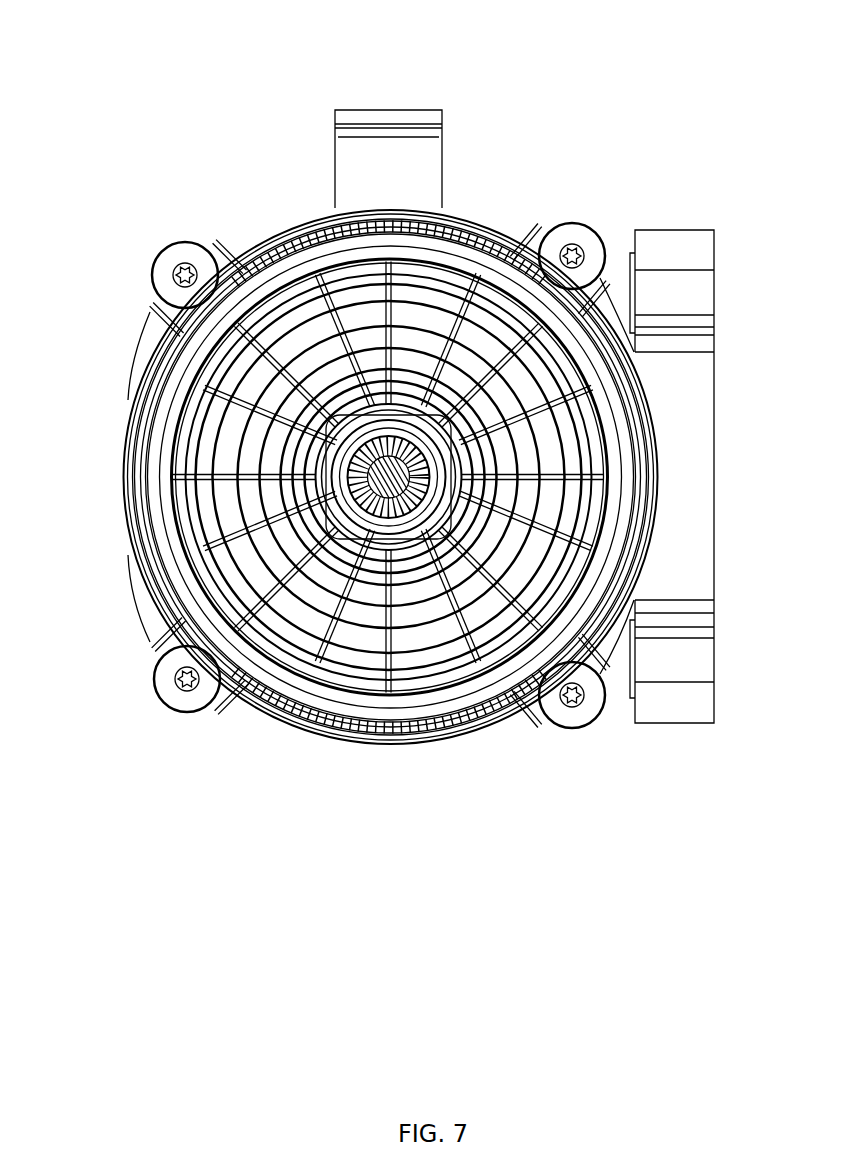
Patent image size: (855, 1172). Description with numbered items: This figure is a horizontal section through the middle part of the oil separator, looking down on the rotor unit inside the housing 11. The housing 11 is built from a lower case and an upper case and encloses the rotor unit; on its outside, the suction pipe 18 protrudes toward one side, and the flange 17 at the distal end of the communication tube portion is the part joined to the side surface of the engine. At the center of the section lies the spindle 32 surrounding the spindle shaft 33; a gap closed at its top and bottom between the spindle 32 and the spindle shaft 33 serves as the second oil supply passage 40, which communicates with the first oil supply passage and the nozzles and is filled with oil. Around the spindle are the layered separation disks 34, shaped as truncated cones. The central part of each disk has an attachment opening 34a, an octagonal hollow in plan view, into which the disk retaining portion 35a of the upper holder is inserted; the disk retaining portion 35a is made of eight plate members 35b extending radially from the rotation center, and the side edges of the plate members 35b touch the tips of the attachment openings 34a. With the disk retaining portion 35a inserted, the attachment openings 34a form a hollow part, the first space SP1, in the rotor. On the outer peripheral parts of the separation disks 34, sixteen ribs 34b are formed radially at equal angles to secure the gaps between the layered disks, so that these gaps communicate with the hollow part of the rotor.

The housing 11 is at (389, 744).
The flange 17 is at (672, 725).
The suction pipe 18 is at (390, 108).
The spindle 32 is at (323, 690).
The spindle shaft 33 is at (165, 632).
The separation disks 34 is at (380, 290).
The attachment opening 34a is at (460, 320).
The ribs 34b is at (500, 395).
The disk retaining portion 35a is at (207, 620).
The plate members 35b is at (625, 462).
The second oil supply passage 40 is at (245, 693).
The first space SP1 is at (495, 277).